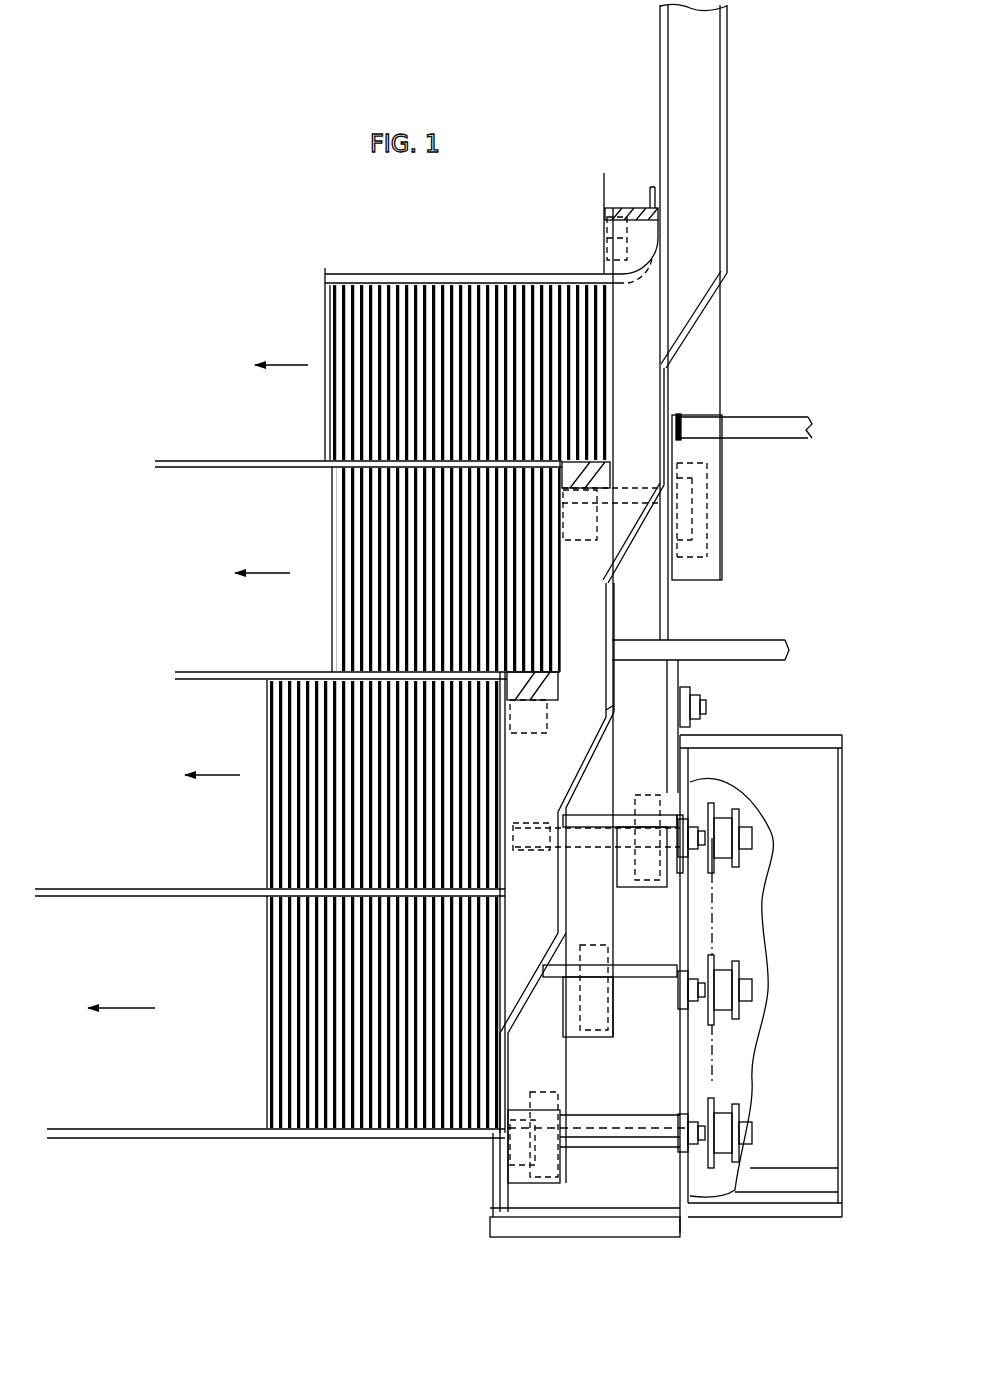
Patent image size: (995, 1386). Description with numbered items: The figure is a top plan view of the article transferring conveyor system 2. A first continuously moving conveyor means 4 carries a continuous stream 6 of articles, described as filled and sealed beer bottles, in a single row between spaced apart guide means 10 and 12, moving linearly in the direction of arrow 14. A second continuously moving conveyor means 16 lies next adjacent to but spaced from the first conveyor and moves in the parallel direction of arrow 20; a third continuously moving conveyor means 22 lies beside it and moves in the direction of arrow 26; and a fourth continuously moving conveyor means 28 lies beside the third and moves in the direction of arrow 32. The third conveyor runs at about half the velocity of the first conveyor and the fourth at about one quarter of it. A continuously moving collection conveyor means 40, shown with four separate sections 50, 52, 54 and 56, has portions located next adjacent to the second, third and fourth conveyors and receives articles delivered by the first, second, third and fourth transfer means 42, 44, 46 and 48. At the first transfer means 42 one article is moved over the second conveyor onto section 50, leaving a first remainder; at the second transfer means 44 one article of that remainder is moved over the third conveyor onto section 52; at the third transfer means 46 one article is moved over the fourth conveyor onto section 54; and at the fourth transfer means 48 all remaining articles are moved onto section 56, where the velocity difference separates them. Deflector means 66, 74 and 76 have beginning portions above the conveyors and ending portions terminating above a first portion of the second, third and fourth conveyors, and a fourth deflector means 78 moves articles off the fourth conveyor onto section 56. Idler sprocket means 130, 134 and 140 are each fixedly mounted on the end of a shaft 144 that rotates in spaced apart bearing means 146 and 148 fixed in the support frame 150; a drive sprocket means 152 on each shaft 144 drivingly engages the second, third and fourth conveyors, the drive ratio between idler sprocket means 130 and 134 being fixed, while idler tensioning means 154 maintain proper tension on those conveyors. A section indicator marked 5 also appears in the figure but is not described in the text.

The article transferring conveyor system 2 is at (780, 595).
The first continuously moving conveyor means 4 is at (678, 118).
The section line 5- 5 is at (510, 330).
The continuous stream 6 is at (603, 163).
The guide means 10 is at (662, 52).
The guide means 12 is at (722, 97).
The arrow 14 is at (695, 377).
The second continuously moving conveyor means 16 is at (651, 427).
The arrow 20 is at (684, 740).
The third continuously moving conveyor means 22 is at (592, 668).
The arrow 26 is at (590, 872).
The fourth continuously moving conveyor means 28 is at (543, 916).
The arrow 32 is at (540, 1060).
The continuously moving collection conveyor means 40 is at (356, 252).
The first transfer means 42 is at (690, 368).
The second transfer means 44 is at (642, 575).
The third transfer means 46 is at (648, 718).
The fourth transfer means 48 is at (638, 1035).
The section 50 is at (330, 412).
The section 52 is at (337, 517).
The section 54 is at (267, 712).
The section 56 is at (267, 922).
The deflector means 66 is at (703, 317).
The deflector means 74 is at (688, 545).
The deflector means 76 is at (592, 772).
The fourth deflector means 78 is at (560, 960).
The idler sprocket means 130 is at (776, 838).
The idler sprocket means 134 is at (790, 979).
The idler sprocket means 140 is at (792, 1153).
The shaft 144 is at (725, 806).
The bearing means 146 is at (690, 690).
The bearing means 148 is at (512, 1150).
The fixed support frame 150 is at (492, 1200).
The drive sprocket means 152 is at (610, 952).
The idler tensioning means 154 is at (613, 228).